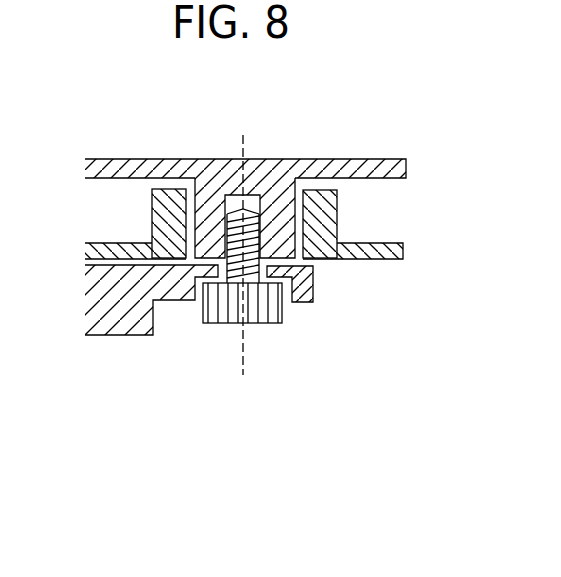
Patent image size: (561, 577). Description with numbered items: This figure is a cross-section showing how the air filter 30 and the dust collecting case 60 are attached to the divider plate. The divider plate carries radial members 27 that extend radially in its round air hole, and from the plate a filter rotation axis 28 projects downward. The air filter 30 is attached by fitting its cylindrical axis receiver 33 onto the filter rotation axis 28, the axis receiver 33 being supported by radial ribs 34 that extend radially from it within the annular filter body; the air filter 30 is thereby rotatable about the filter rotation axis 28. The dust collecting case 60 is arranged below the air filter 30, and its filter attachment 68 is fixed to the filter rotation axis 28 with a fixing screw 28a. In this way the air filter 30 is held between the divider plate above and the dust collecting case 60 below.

The radial member 27 is at (376, 158).
The filter rotation axis 28 is at (283, 203).
The fixing screw 28a is at (268, 325).
The air filter 30 is at (400, 233).
The axis receiver 33 is at (168, 212).
The radial rib 34 is at (391, 260).
The dust collecting case 60 is at (123, 345).
The filter attachment 68 is at (314, 282).